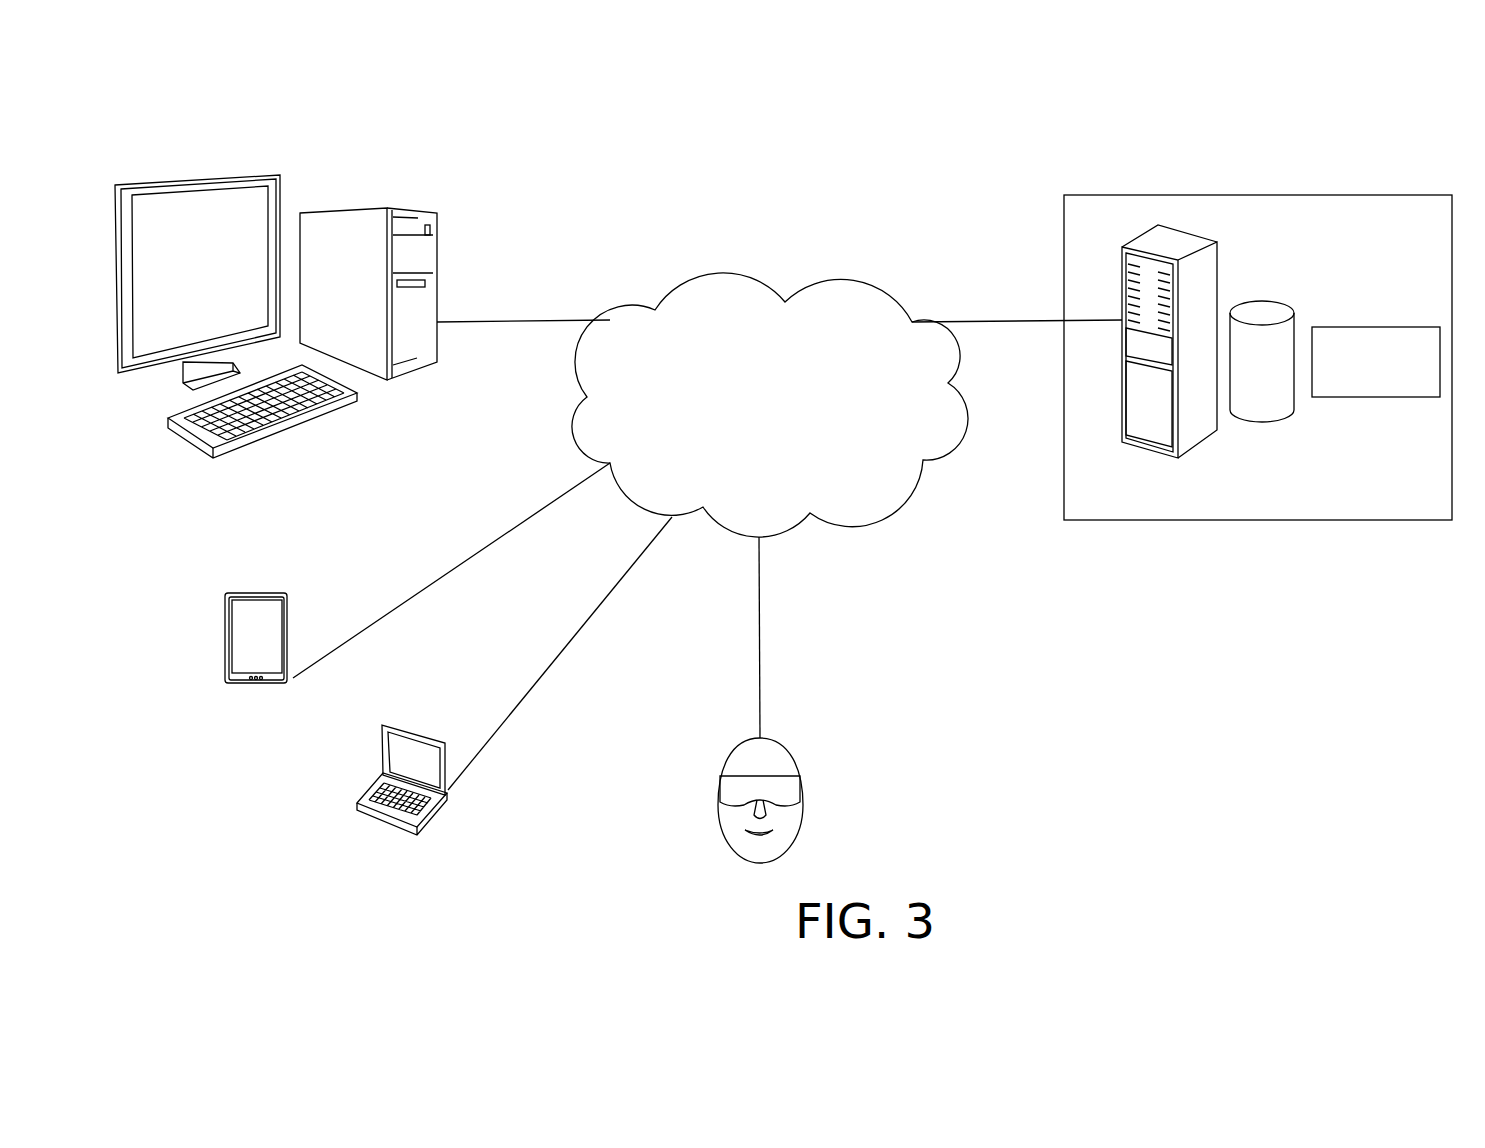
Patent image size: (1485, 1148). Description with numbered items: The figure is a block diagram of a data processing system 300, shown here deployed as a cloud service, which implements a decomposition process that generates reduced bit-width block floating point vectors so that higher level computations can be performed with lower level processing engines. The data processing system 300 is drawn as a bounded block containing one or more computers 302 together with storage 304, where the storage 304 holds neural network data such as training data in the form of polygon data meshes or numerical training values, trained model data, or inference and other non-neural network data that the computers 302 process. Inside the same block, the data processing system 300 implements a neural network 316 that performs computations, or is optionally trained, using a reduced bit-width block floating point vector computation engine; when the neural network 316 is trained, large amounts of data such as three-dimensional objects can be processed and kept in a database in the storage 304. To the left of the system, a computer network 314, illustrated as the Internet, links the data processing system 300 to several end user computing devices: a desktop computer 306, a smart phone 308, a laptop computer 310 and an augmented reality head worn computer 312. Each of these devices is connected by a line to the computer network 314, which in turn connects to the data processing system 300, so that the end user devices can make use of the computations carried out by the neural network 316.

The data processing system 300 is at (1236, 122).
The computers 302 is at (1197, 243).
The storage 304 is at (1258, 307).
The desktop computer 306 is at (198, 122).
The smart phone 308 is at (268, 592).
The laptop computer 310 is at (423, 733).
The augmented reality head worn computer 312 is at (785, 745).
The computer network 314 is at (796, 178).
The neural network 316 is at (1365, 398).